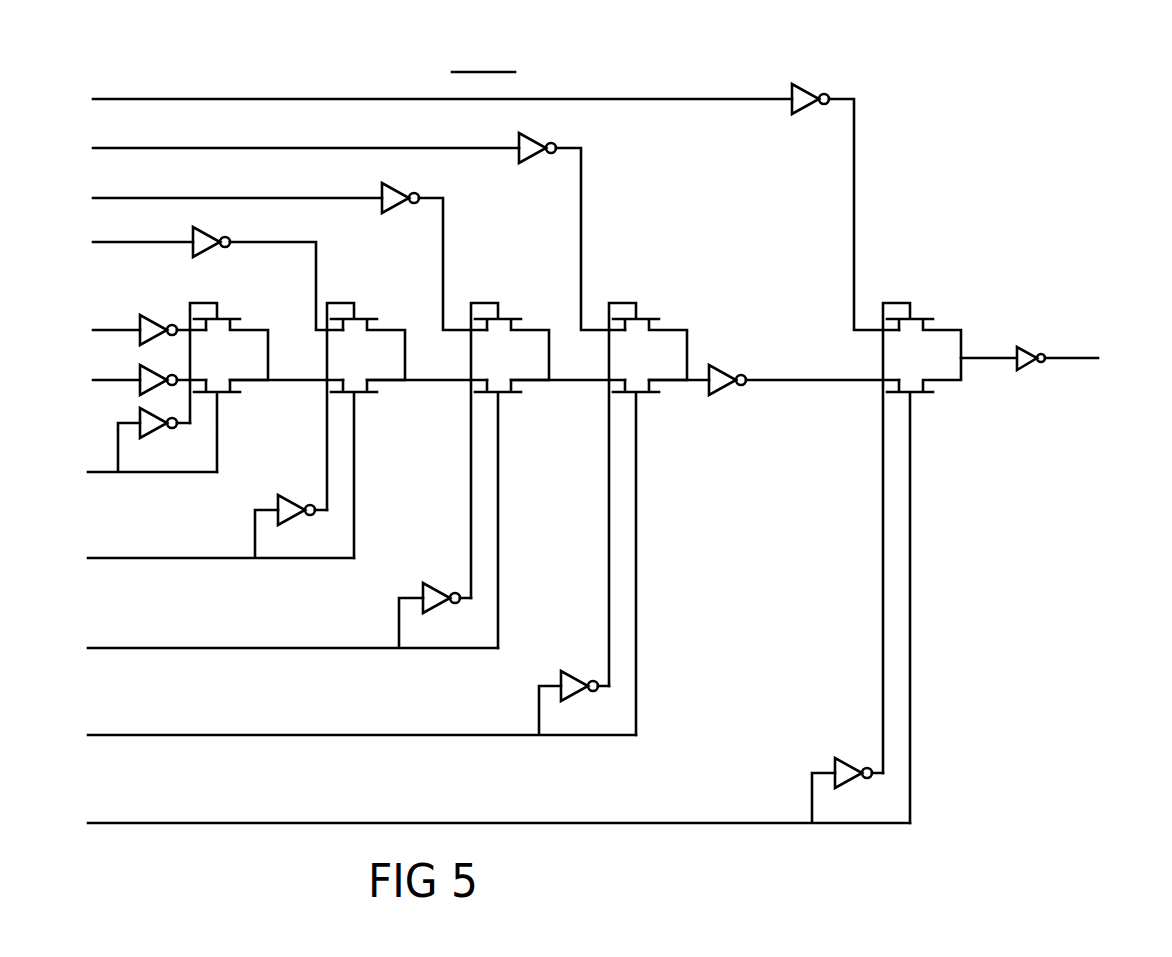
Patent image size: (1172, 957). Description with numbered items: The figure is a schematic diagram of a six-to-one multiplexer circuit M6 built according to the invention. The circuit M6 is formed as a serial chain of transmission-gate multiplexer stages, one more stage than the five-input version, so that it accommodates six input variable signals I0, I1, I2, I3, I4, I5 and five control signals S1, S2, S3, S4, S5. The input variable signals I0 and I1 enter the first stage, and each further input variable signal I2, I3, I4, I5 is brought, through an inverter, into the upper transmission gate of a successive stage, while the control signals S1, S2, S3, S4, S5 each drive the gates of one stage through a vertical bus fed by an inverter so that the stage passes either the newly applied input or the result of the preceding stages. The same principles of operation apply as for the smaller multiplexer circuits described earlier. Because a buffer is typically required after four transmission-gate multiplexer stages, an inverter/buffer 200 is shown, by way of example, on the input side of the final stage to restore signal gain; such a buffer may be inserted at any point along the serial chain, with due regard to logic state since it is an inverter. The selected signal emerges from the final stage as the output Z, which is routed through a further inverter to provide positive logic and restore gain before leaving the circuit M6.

The inverter/buffer 200 is at (727, 385).
The input variable signal I0 is at (149, 322).
The input variable signal I1 is at (149, 376).
The input variable signal I2 is at (218, 273).
The input variable signal I3 is at (290, 249).
The input variable signal I4 is at (359, 221).
The input variable signal I5 is at (496, 199).
The control signal S1 is at (152, 440).
The control signal S2 is at (221, 526).
The control signal S3 is at (293, 615).
The control signal S4 is at (362, 703).
The control signal S5 is at (499, 790).
The multiplexer output Z is at (1029, 349).
The 6:1 multiplexer circuit M6 is at (483, 51).